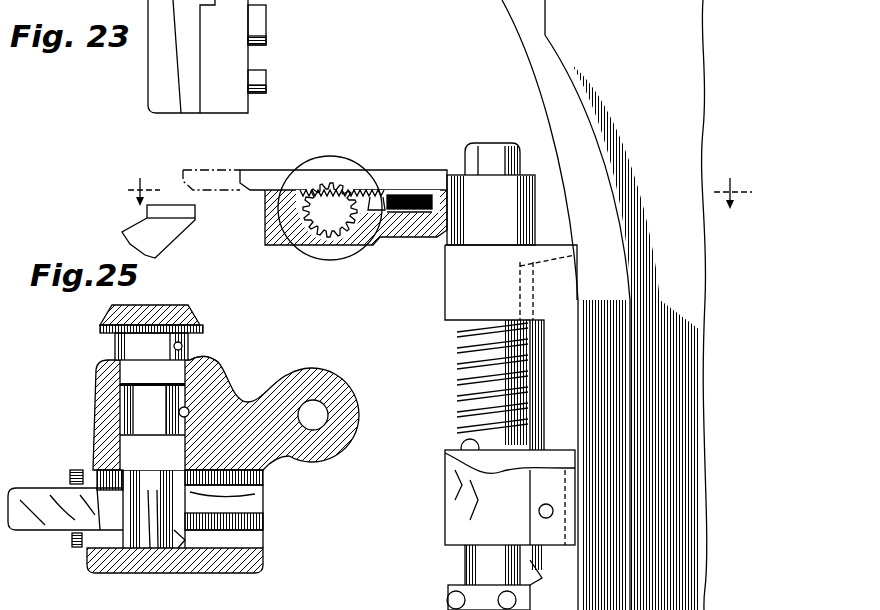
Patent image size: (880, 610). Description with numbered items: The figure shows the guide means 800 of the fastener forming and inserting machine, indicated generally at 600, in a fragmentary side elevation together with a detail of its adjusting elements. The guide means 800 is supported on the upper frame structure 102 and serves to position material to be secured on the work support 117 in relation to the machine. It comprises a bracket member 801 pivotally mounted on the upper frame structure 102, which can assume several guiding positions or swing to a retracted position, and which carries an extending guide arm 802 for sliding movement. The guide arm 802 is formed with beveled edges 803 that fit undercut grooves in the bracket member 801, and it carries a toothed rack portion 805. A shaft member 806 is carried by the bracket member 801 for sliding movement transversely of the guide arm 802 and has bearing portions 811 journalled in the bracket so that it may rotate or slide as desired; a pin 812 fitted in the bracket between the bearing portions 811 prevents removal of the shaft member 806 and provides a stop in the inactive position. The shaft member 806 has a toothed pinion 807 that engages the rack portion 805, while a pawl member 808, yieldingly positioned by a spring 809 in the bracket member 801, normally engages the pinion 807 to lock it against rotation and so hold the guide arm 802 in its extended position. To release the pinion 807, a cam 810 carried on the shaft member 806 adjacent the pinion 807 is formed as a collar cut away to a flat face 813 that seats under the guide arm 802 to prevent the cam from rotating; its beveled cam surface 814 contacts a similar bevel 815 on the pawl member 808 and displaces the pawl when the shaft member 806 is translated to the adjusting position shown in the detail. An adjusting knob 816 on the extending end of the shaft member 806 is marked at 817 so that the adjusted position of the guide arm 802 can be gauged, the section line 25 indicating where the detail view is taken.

In FIG. 23, the fastener forming and inserting machine 600 is at (146, 105).
In FIG. 23, the upper frame structure 102 is at (690, 68).
In FIG. 23, the section line 25- 25 is at (437, 193).
In FIG. 23, the work support 117 is at (177, 229).
In FIG. 23, the extending guide arm 802 is at (270, 168).
In FIG. 25, the extending guide arm 802 is at (40, 525).
In FIG. 23, the bracket member 801 is at (430, 240).
In FIG. 25, the bracket member 801 is at (250, 407).
In FIG. 23, the rack portion 805 is at (366, 188).
In FIG. 23, the pinion 807 is at (300, 245).
In FIG. 25, the pinion 807 is at (150, 548).
In FIG. 23, the pawl member 808 is at (367, 226).
In FIG. 25, the pawl member 808 is at (258, 500).
In FIG. 23, the spring 809 is at (401, 213).
In FIG. 23, the guide means 800 is at (440, 511).
In FIG. 25, the adjusting knob 816 is at (115, 314).
In FIG. 25, the marking 817 is at (150, 347).
In FIG. 25, the bearing portions 811 is at (132, 371).
In FIG. 25, the shaft member 806 is at (136, 400).
In FIG. 25, the pin 812 is at (220, 374).
In FIG. 25, the beveled edges 803 is at (72, 475).
In FIG. 25, the flat face 813 is at (115, 548).
In FIG. 25, the cam 810 is at (165, 540).
In FIG. 25, the beveled cam surface 814 is at (183, 540).
In FIG. 25, the bevel 815 is at (232, 486).